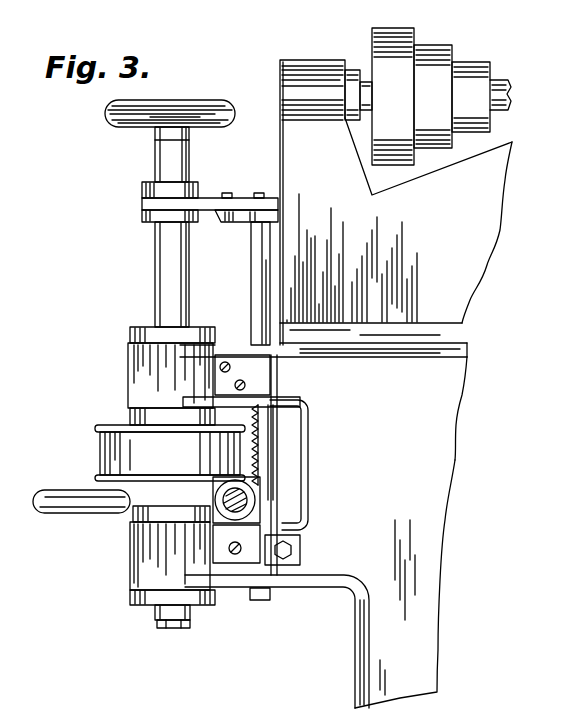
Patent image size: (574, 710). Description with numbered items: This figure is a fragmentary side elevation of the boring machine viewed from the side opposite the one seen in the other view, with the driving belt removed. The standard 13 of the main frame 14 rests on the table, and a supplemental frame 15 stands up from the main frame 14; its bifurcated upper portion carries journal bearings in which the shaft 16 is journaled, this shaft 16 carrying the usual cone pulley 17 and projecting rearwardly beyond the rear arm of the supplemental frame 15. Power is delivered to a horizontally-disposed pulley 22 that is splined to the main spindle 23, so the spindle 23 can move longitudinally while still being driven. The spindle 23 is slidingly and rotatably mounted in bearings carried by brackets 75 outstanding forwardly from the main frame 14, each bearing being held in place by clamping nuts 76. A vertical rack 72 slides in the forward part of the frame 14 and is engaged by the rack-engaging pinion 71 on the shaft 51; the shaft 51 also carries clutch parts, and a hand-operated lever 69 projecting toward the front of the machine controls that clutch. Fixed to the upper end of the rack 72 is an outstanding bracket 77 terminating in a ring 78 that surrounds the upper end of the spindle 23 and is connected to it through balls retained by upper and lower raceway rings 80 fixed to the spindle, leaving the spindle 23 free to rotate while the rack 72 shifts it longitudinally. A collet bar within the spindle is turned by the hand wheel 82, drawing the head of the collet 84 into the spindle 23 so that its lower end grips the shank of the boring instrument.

The standard 13 is at (425, 642).
The main frame 14 is at (455, 413).
The supplemental frame 15 is at (480, 264).
The shaft 16 is at (508, 92).
The cone pulley 17 is at (448, 60).
The pulley 22 is at (100, 449).
The main spindle 23 is at (155, 282).
The shaft 51 is at (200, 472).
The hand-operated lever 69 is at (78, 505).
The rack-engaging pinion 71 is at (275, 465).
The vertical rack 72 is at (254, 283).
The bracket 75 is at (147, 362).
The clamping nut 76 is at (132, 335).
The outstanding bracket 77 is at (236, 205).
The ring 78 is at (168, 203).
The raceway ring 80 is at (142, 195).
The hand wheel 82 is at (105, 113).
The collet 84 is at (186, 626).